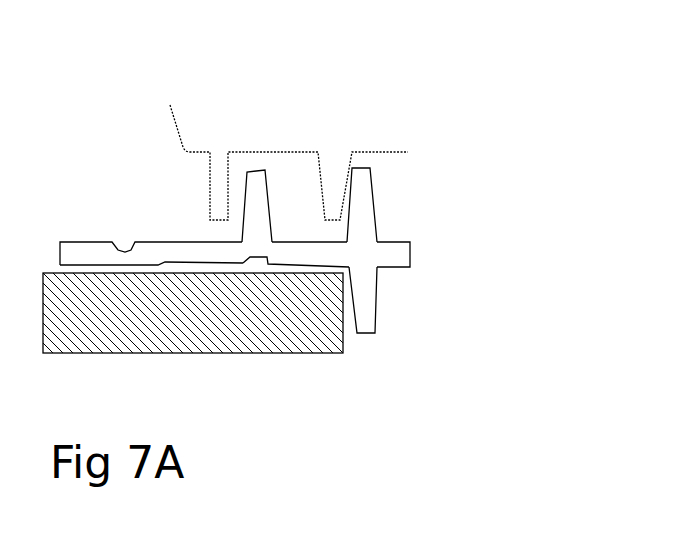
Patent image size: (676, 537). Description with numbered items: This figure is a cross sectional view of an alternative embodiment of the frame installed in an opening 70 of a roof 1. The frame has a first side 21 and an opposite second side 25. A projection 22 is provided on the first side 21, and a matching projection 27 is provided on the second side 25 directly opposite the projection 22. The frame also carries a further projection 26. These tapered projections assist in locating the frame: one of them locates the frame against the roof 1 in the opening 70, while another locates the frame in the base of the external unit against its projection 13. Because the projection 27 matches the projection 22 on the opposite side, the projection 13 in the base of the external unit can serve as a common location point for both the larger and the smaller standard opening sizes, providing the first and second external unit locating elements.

The roof 1 is at (292, 353).
The projection 13 is at (345, 192).
The first side 21 is at (118, 262).
The projection 22 is at (377, 303).
The second side 25 is at (165, 242).
The projection 26 is at (251, 170).
The matching projection 27 is at (373, 187).
The opening 70 is at (525, 337).